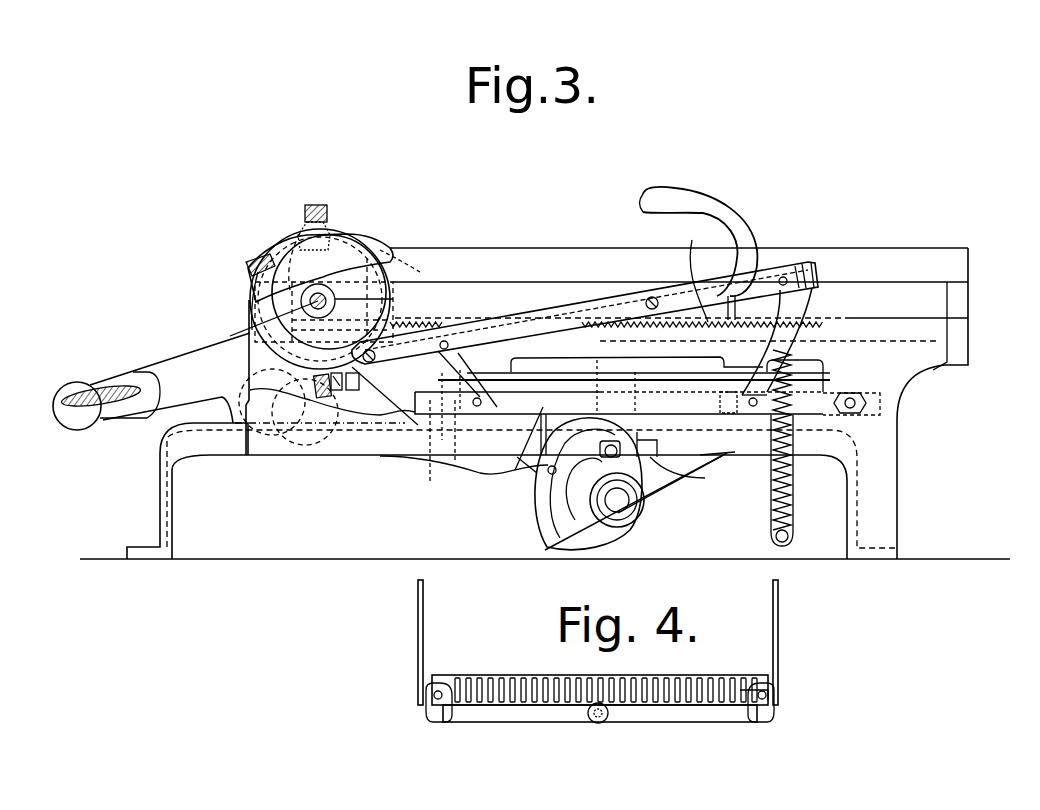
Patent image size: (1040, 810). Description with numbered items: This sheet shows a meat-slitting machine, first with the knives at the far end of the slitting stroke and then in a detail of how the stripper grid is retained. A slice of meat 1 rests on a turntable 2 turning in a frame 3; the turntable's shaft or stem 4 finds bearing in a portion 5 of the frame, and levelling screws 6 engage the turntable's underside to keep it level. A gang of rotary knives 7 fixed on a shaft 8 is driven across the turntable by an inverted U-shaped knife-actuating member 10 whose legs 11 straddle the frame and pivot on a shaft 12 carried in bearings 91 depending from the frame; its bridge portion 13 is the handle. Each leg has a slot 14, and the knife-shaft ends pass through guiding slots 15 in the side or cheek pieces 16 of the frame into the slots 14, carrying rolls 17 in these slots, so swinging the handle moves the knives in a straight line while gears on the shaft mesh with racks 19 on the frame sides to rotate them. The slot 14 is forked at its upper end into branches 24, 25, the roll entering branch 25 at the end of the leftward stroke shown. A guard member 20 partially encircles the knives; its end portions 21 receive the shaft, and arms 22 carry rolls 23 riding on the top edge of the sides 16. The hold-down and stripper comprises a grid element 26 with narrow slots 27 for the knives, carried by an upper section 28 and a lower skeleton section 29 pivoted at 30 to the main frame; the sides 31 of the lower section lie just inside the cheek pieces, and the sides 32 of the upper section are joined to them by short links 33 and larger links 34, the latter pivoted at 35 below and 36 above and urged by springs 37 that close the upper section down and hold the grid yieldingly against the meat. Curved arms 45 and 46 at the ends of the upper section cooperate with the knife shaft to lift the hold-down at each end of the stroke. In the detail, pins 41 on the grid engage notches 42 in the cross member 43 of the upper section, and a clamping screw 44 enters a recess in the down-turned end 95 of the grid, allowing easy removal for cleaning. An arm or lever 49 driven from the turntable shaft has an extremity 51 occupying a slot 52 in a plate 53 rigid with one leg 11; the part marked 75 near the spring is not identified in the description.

In FIG. 3, the meat 1 is at (612, 356).
In FIG. 3, the turntable 2 is at (667, 373).
In FIG. 3, the frame 3 is at (888, 440).
In FIG. 3, the shaft or stem 4 is at (619, 422).
In FIG. 3, the portion of the frame 5 is at (668, 420).
In FIG. 3, the levelling screws 6 is at (718, 403).
In FIG. 3, the rotary knives 7 is at (250, 300).
In FIG. 3, the shaft 8 is at (260, 318).
In FIG. 3, the knife-actuating member 10 is at (118, 372).
In FIG. 3, the legs 11 is at (492, 475).
In FIG. 3, the shaft 12 is at (630, 507).
In FIG. 3, the bridge portion 13 is at (77, 398).
In FIG. 3, the slot 14 is at (438, 451).
In FIG. 3, the guiding slots 15 is at (490, 280).
In FIG. 3, the sides or cheek pieces 16 is at (578, 236).
In FIG. 3, the rolls 17 is at (393, 299).
In FIG. 3, the racks 19 is at (692, 272).
In FIG. 3, the guard member 20 is at (340, 236).
In FIG. 3, the end portions 21 is at (272, 268).
In FIG. 3, the arms 22 is at (323, 207).
In FIG. 3, the rolls 23 is at (300, 236).
In FIG. 3, the branch 24 is at (250, 400).
In FIG. 3, the branch 25 is at (395, 262).
In FIG. 3, the grid element 26 is at (472, 330).
In FIG. 4, the grid element 26 is at (458, 675).
In FIG. 4, the narrow slots 27 is at (518, 675).
In FIG. 3, the upper section 28 is at (812, 265).
In FIG. 4, the upper section 28 is at (768, 685).
In FIG. 3, the lower section 29 is at (895, 392).
In FIG. 3, the pivot 30 is at (866, 403).
In FIG. 3, the sides 31 is at (530, 470).
In FIG. 3, the sides 32 is at (540, 318).
In FIG. 3, the links 33 is at (443, 350).
In FIG. 3, the links 34 is at (800, 305).
In FIG. 3, the pivot 35 is at (753, 407).
In FIG. 3, the pivot 36 is at (785, 276).
In FIG. 3, the springs 37 is at (792, 478).
In FIG. 4, the pins 41 is at (446, 725).
In FIG. 4, the notches 42 is at (428, 712).
In FIG. 3, the end or cross member 43 is at (345, 390).
In FIG. 4, the end or cross member 43 is at (650, 722).
In FIG. 3, the clamping screw 44 is at (335, 400).
In FIG. 4, the clamping screw 44 is at (594, 722).
In FIG. 3, the curved arms 45 is at (705, 200).
In FIG. 3, the curved arms 46 is at (306, 265).
In FIG. 4, the curved arms 46 is at (416, 615).
In FIG. 3, the arm or lever 49 is at (696, 474).
In FIG. 3, the extremity 51 is at (660, 497).
In FIG. 3, the slot 52 is at (607, 533).
In FIG. 3, the plate 53 is at (543, 527).
In FIG. 3, the spring eye 75 is at (792, 518).
In FIG. 3, the bearings 91 is at (687, 500).
In FIG. 3, the down-turned end 95 is at (358, 390).